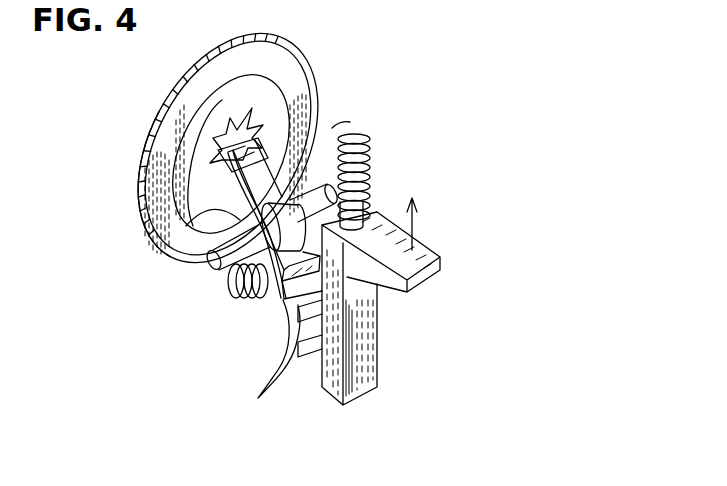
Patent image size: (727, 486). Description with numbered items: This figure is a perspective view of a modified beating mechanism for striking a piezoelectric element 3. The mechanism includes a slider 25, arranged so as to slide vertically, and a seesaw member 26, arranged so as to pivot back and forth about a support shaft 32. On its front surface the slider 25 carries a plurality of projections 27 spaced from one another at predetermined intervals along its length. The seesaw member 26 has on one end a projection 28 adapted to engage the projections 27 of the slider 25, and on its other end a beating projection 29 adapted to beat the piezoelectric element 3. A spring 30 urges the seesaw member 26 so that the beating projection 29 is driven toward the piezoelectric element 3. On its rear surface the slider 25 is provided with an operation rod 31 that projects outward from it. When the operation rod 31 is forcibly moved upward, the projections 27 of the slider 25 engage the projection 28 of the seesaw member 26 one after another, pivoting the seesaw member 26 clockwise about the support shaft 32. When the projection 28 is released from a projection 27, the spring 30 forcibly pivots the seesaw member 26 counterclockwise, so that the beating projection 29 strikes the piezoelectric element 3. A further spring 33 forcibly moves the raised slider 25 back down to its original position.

The piezoelectric element 3 is at (277, 117).
The slider 25 is at (362, 338).
The seesaw member 26 is at (238, 195).
The projections 27 is at (287, 384).
The projection 28 is at (284, 310).
The beating projection 29 is at (228, 176).
The spring 30 is at (230, 293).
The operation rod 31 is at (433, 278).
The support shaft 32 is at (163, 249).
The spring 33 is at (368, 169).